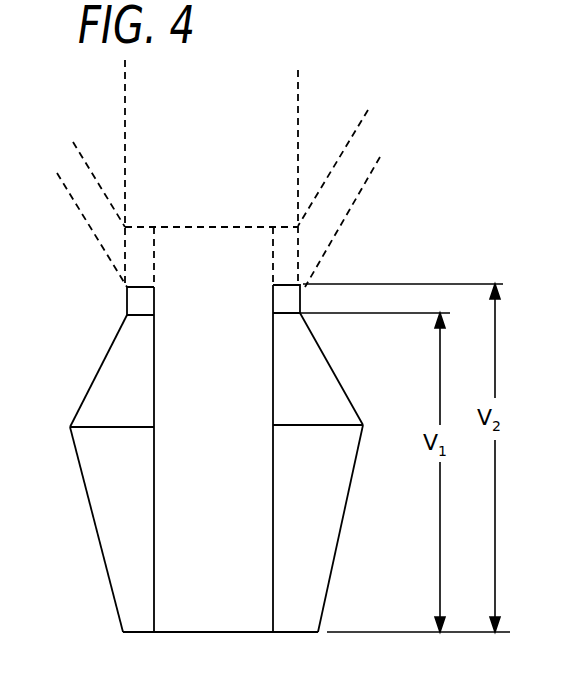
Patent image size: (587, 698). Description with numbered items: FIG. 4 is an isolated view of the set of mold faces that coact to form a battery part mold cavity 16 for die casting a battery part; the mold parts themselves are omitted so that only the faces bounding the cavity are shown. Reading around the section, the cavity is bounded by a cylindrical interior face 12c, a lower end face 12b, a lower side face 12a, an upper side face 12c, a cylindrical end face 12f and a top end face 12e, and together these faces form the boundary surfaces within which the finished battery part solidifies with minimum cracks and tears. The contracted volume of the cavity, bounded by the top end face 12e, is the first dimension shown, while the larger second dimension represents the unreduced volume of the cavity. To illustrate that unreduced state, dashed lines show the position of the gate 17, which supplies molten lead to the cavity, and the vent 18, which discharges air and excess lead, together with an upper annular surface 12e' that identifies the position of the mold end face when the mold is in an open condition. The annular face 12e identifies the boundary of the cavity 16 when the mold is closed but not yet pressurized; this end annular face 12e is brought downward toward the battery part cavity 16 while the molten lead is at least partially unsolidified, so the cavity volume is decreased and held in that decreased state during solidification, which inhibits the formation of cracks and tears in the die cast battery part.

The lower side face 12a is at (337, 547).
The lower end face 12b is at (140, 634).
The cylindrical interior face 12c is at (330, 360).
The top end face 12e is at (328, 285).
The annular surface 12e' is at (269, 173).
The cylindrical end face 12f is at (124, 296).
The battery part cavity 16 is at (325, 472).
The gate 17 is at (357, 167).
The vent 18 is at (95, 210).